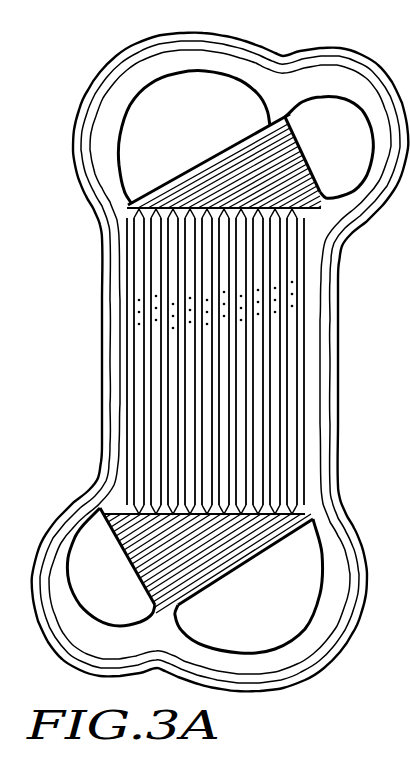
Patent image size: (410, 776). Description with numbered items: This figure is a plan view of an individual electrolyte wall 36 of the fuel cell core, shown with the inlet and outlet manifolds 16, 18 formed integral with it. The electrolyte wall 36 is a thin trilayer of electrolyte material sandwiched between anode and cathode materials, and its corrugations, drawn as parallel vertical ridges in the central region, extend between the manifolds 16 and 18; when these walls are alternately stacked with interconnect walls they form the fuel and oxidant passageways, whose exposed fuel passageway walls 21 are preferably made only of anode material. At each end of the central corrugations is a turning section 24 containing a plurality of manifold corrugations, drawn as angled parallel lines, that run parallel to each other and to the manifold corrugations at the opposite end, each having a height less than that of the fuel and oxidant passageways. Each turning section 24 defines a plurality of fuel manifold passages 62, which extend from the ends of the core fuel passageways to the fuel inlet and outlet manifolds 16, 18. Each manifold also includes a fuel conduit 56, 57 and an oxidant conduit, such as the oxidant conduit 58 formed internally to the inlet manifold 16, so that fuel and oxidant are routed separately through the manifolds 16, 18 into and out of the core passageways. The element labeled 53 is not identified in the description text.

The electrolyte wall 36 is at (215, 352).
The outlet manifold 18 is at (283, 52).
The inlet manifold 16 is at (162, 668).
The fuel conduit 57 is at (198, 63).
The fuel conduit 56 is at (318, 623).
The port 53 is at (370, 120).
The oxidant conduit 58 is at (83, 537).
The fuel manifold passages 62 is at (310, 167).
The fuel passageway walls 21 is at (302, 303).
The turning section 24 is at (218, 150).